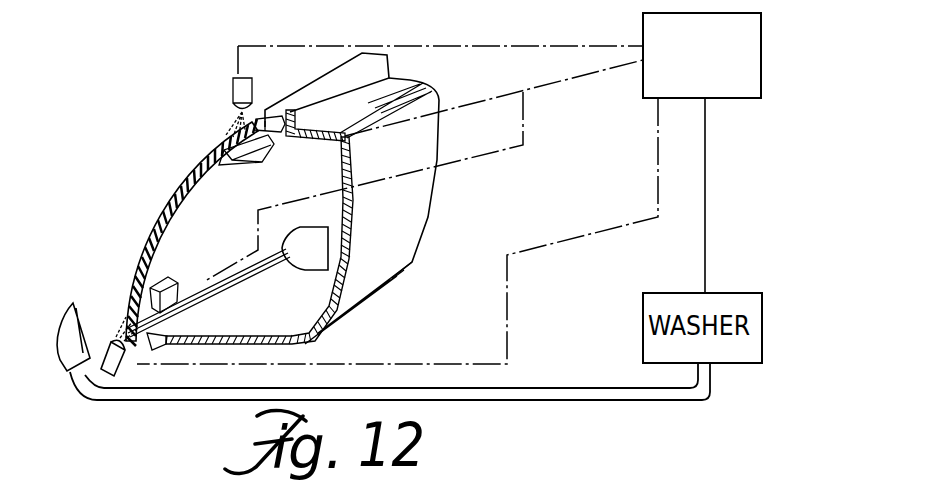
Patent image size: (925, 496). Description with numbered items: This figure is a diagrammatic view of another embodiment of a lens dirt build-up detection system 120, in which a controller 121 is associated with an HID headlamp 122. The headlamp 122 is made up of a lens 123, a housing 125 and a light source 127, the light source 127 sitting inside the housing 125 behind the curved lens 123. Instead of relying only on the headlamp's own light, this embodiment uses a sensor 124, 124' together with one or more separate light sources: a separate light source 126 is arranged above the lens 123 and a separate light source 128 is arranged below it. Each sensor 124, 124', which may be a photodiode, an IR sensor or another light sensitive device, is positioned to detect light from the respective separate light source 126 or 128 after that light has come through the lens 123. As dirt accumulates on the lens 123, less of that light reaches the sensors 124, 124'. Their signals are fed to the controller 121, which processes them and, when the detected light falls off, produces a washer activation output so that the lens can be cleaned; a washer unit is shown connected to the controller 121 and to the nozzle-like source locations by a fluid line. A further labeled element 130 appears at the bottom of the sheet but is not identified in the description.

The lens dirt build-up detection system 120 is at (524, 44).
The controller 121 is at (752, 70).
The HID headlamp 122 is at (425, 208).
The lens 123 is at (180, 184).
The sensor 124 is at (237, 186).
The sensor 124' is at (122, 267).
The housing 125 is at (312, 338).
The separate light source 126 is at (232, 106).
The light source 127 is at (300, 272).
The separate light source 128 is at (107, 373).
The washer fluid line 130 is at (507, 484).